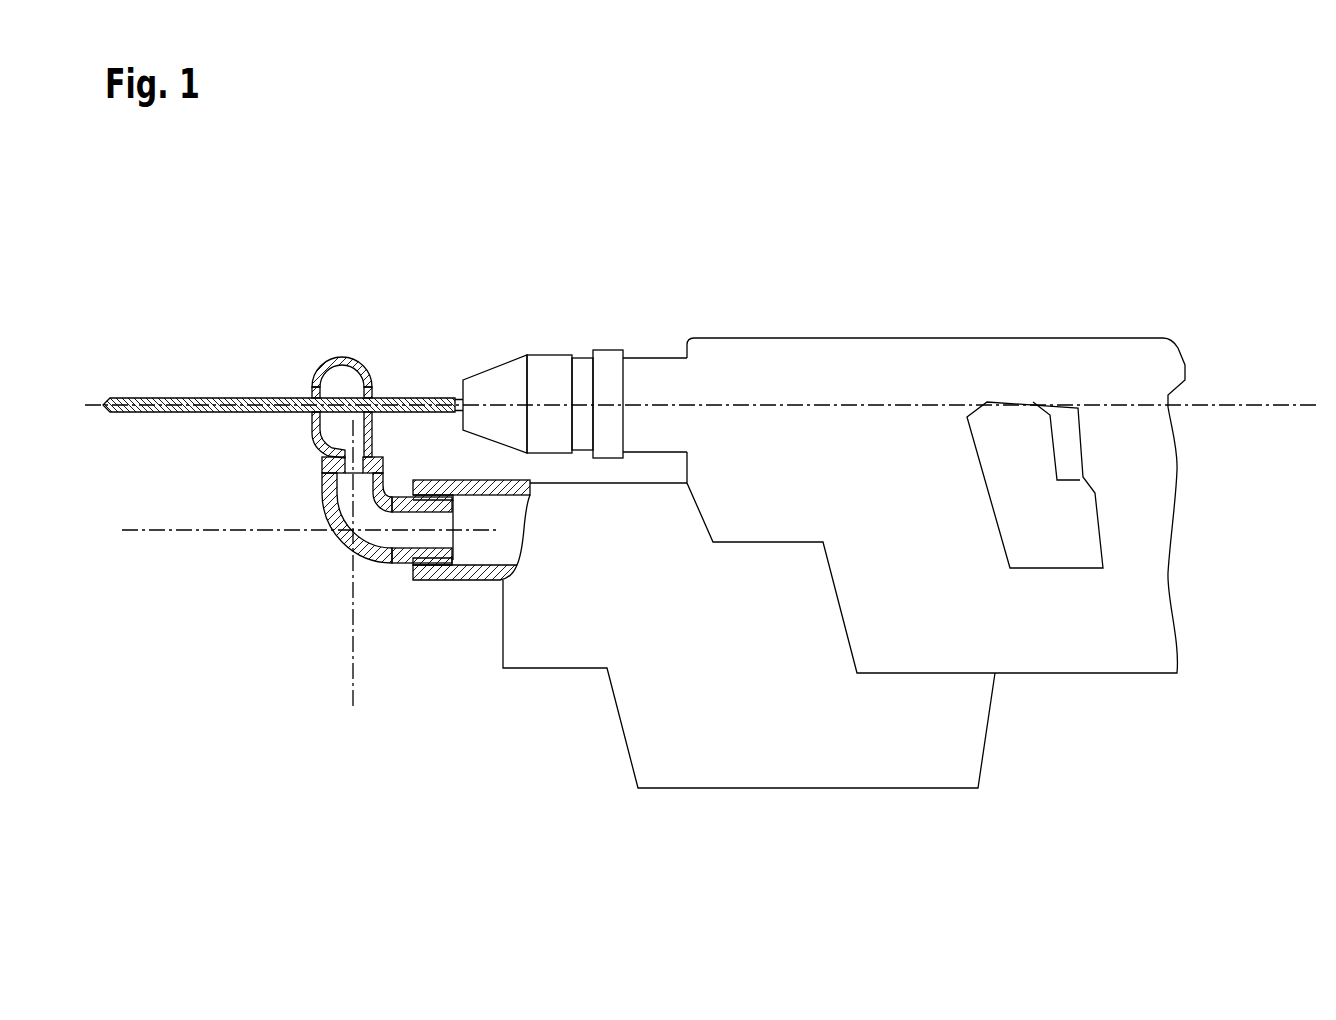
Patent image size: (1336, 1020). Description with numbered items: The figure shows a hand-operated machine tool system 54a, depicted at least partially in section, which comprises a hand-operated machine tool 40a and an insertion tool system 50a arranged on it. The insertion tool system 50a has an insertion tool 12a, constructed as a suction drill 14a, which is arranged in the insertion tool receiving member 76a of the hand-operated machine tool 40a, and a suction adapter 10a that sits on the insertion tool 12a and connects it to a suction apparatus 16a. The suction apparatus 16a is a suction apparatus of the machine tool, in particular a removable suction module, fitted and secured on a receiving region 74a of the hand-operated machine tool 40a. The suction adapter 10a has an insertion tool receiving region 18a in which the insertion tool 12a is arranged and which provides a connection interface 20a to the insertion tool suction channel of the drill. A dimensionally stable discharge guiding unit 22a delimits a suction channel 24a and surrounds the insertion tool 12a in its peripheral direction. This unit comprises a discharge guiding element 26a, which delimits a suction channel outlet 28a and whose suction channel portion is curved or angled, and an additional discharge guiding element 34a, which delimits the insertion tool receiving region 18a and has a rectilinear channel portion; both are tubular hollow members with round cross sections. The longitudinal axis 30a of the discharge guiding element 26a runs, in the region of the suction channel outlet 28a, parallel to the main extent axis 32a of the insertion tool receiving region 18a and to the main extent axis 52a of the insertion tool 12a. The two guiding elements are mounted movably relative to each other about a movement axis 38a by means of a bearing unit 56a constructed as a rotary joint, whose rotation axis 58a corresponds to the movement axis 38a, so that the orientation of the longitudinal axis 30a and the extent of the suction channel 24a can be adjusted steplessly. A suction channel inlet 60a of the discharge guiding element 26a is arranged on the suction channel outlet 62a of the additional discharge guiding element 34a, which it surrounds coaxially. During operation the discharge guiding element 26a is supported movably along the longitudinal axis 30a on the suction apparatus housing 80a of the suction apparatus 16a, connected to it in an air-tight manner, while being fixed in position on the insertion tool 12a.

The suction adapter 10a is at (349, 409).
The insertion tool 12a is at (276, 361).
The suction drill 14a is at (145, 398).
The suction apparatus 16a is at (543, 690).
The insertion tool receiving region 18a is at (319, 364).
The connection interface 20a is at (330, 371).
The discharge guiding unit 22a is at (305, 511).
The suction channel 24a is at (336, 487).
The discharge guiding element 26a is at (398, 565).
The suction channel outlet 28a is at (471, 579).
The longitudinal axis 30a is at (155, 535).
The main extent axis of the insertion tool receiving region 32a is at (702, 454).
The additional discharge guiding element 34a is at (372, 362).
The movement axis 38a is at (275, 567).
The hand-operated machine tool 40a is at (863, 487).
The insertion tool system 50a is at (295, 370).
The main extent axis of the insertion tool 52a is at (1270, 408).
The hand-operated machine tool system 54a is at (382, 220).
The bearing unit 56a is at (406, 374).
The rotation axis 58a is at (350, 697).
The suction channel inlet 60a is at (256, 435).
The suction channel outlet of the additional discharge guiding element 62a is at (345, 458).
The receiving region 74a is at (862, 628).
The insertion tool receiving member 76a is at (455, 388).
The suction apparatus housing 80a is at (468, 583).